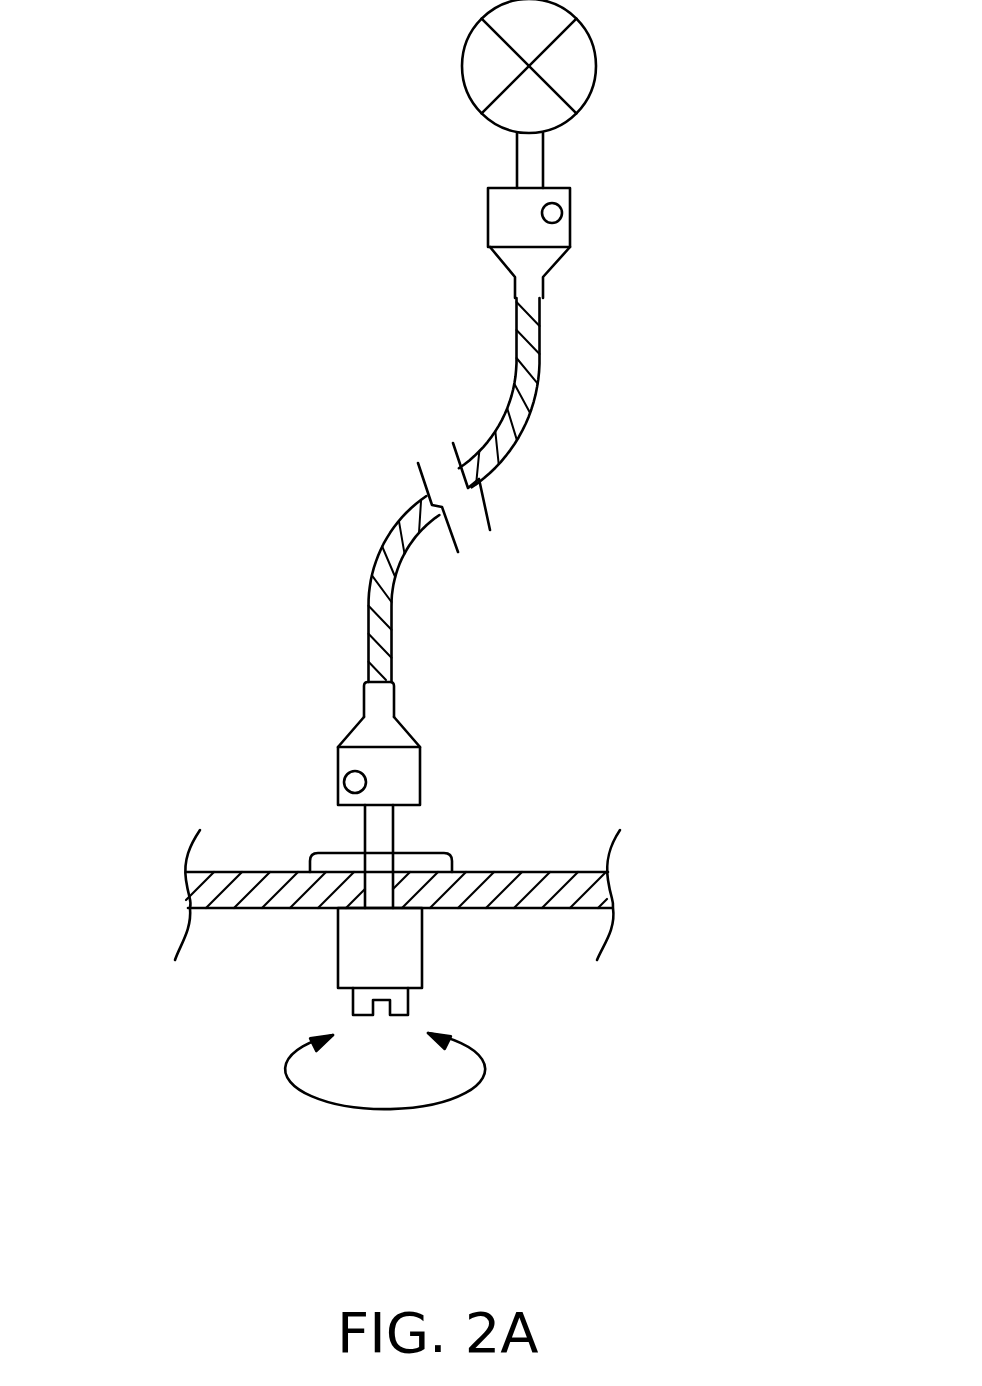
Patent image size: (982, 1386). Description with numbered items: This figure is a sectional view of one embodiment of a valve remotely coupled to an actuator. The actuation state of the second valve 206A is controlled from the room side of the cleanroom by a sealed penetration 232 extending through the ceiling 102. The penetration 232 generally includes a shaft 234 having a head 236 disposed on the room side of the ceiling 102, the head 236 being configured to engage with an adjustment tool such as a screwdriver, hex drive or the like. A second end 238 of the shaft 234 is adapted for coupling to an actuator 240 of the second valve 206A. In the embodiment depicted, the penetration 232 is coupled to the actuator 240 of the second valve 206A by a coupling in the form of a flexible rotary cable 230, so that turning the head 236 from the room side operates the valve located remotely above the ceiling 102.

The second valve 206A is at (594, 86).
The actuator 240 is at (517, 157).
The flexible rotary cable 230 is at (518, 437).
The second end 238 is at (363, 830).
The shaft 234 is at (382, 827).
The ceiling 102 is at (547, 908).
The penetration 232 is at (338, 948).
The head 236 is at (408, 1000).